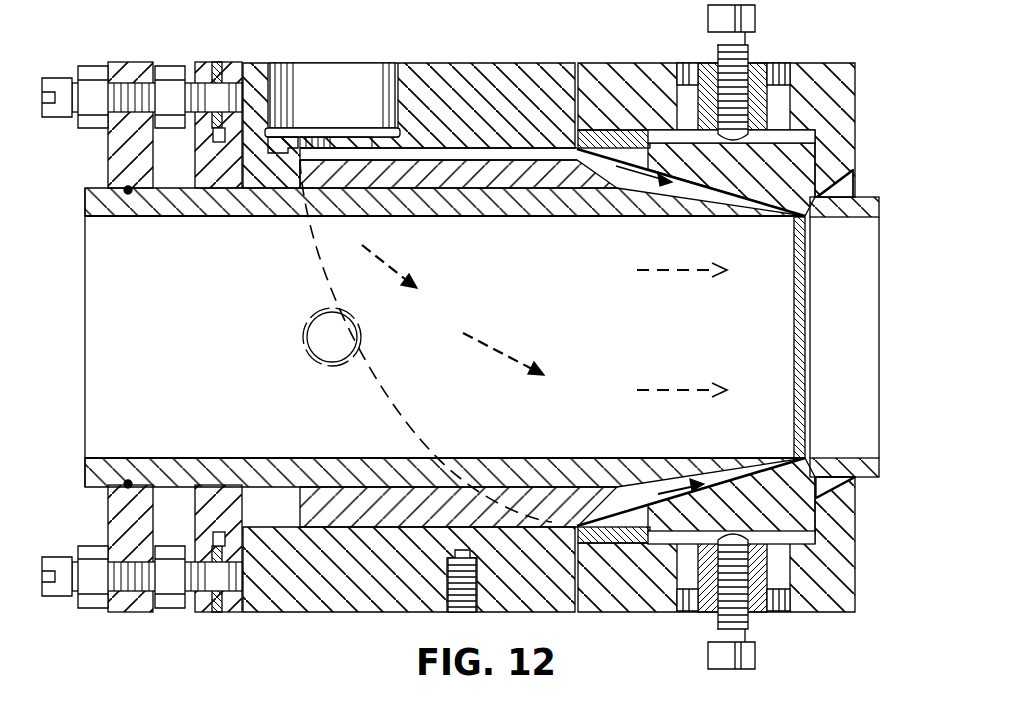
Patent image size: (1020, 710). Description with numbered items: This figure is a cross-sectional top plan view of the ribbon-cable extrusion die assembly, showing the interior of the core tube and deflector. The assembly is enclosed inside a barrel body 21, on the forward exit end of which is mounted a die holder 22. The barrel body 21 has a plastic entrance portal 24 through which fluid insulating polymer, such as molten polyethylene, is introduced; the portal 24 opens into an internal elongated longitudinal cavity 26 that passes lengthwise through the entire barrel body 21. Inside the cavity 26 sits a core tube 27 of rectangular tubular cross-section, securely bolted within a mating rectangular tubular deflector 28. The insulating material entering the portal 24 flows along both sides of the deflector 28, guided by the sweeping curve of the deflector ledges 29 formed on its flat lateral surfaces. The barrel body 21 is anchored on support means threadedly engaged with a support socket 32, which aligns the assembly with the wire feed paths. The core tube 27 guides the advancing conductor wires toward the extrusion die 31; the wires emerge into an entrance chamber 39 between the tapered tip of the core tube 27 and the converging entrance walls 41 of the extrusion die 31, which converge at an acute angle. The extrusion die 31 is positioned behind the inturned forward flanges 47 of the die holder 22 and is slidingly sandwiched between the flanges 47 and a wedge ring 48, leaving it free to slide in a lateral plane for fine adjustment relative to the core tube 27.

The barrel body 21 is at (418, 78).
The die holder 22 is at (607, 72).
The plastic entrance portal 24 is at (323, 85).
The longitudinal cavity 26 is at (538, 150).
The core tube 27 is at (417, 200).
The deflector 28 is at (465, 172).
The deflector ledges 29 is at (379, 390).
The extrusion die 31 is at (862, 197).
The support socket 32 is at (465, 606).
The entrance chamber 39 is at (808, 376).
The converging entrance walls 41 is at (747, 198).
The inturned forward flanges 47 is at (838, 166).
The wedge ring 48 is at (638, 500).